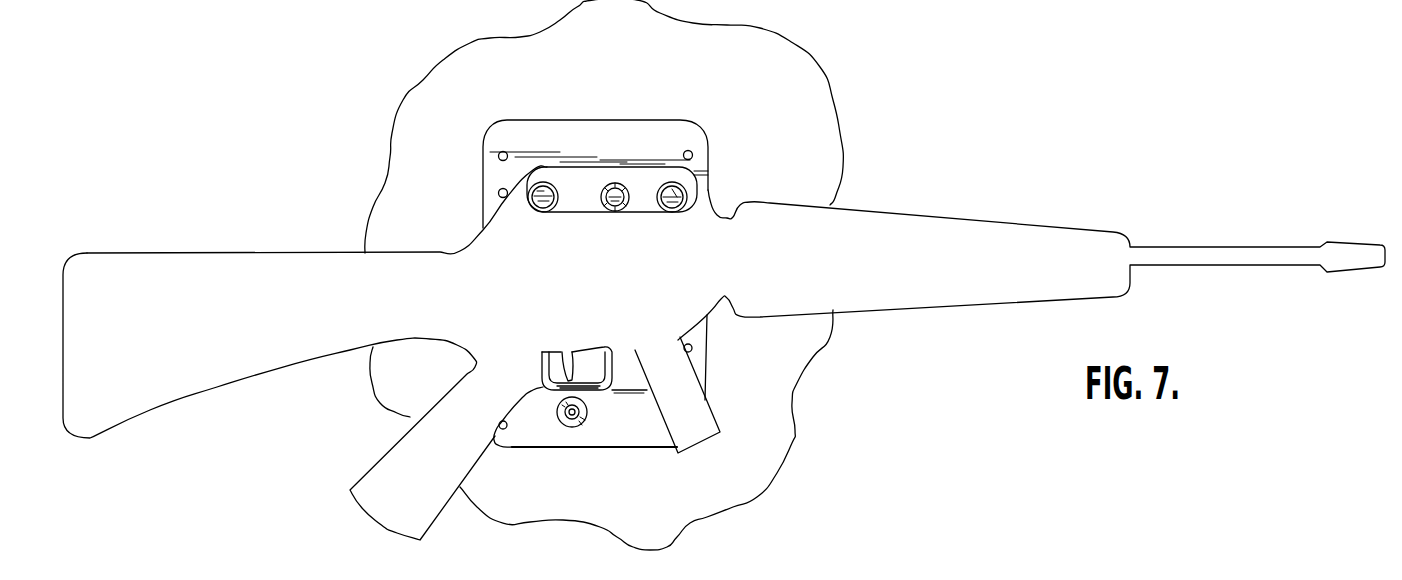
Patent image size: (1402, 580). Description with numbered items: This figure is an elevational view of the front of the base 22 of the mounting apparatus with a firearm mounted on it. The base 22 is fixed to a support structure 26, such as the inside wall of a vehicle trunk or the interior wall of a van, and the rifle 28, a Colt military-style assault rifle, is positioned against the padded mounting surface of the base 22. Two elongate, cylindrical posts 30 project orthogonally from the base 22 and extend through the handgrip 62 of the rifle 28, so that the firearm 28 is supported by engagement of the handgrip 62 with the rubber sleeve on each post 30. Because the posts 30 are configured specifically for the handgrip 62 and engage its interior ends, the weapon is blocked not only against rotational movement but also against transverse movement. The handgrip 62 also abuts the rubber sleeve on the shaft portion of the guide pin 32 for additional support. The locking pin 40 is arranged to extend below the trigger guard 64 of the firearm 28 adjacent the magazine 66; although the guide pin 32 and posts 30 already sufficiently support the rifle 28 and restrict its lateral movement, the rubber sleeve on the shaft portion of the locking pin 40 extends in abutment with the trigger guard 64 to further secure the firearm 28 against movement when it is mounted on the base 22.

The base 22 is at (570, 137).
The support structure 26 is at (823, 117).
The rifle 28 is at (973, 220).
The posts 30 is at (527, 202).
The guide pin 32 is at (615, 187).
The locking pin 40 is at (575, 428).
The handgrip 62 is at (592, 213).
The trigger guard 64 is at (596, 391).
The magazine 66 is at (703, 442).